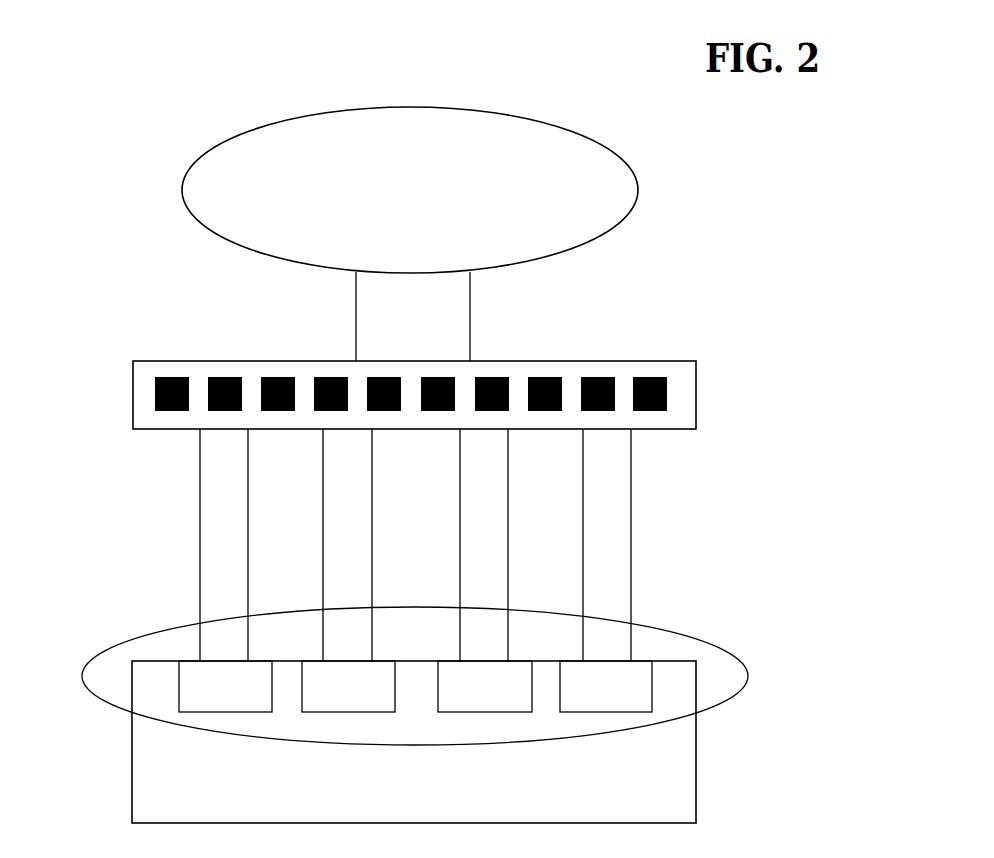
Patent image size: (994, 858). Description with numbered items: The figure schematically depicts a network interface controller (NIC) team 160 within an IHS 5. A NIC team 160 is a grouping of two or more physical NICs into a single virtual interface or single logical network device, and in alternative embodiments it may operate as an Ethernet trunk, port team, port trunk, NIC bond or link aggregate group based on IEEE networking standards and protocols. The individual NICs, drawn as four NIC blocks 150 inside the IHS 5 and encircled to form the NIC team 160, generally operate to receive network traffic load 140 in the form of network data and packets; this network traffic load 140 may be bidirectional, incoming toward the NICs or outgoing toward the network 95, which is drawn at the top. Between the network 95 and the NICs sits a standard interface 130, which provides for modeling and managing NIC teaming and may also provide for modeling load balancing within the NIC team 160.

The network 95 is at (183, 191).
The standard interface 130 is at (697, 388).
The network traffic load 140 is at (200, 537).
The network interface cards 150 is at (179, 713).
The NIC team 160 is at (750, 679).
The IHS 5 is at (132, 812).